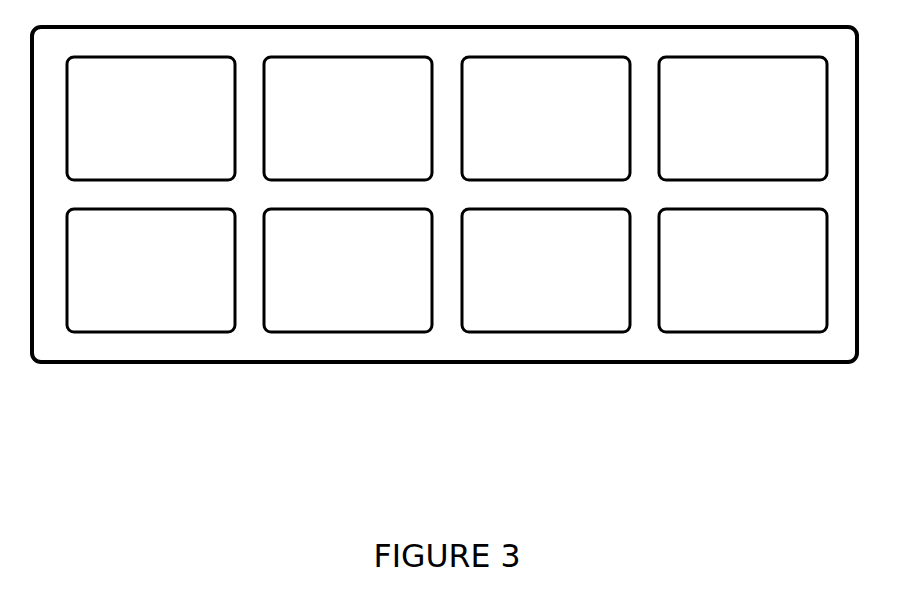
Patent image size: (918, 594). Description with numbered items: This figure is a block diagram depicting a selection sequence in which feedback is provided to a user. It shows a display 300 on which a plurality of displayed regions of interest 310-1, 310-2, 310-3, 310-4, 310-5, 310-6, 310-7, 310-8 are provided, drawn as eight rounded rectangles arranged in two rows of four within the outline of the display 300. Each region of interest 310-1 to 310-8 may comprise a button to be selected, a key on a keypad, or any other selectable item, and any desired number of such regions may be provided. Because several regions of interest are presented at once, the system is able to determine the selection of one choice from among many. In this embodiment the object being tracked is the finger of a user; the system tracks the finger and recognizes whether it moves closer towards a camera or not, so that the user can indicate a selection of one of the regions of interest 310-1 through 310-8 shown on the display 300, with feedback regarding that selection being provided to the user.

The display 300 is at (250, 362).
The region of interest 310-1 is at (151, 118).
The region of interest 310-2 is at (348, 118).
The region of interest 310-3 is at (546, 118).
The region of interest 310-4 is at (743, 118).
The region of interest 310-5 is at (151, 270).
The region of interest 310-6 is at (348, 270).
The region of interest 310-7 is at (546, 270).
The region of interest 310-8 is at (743, 270).